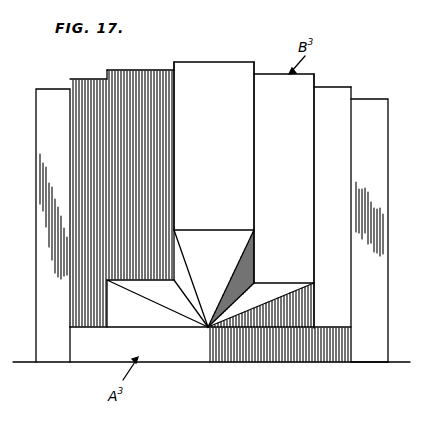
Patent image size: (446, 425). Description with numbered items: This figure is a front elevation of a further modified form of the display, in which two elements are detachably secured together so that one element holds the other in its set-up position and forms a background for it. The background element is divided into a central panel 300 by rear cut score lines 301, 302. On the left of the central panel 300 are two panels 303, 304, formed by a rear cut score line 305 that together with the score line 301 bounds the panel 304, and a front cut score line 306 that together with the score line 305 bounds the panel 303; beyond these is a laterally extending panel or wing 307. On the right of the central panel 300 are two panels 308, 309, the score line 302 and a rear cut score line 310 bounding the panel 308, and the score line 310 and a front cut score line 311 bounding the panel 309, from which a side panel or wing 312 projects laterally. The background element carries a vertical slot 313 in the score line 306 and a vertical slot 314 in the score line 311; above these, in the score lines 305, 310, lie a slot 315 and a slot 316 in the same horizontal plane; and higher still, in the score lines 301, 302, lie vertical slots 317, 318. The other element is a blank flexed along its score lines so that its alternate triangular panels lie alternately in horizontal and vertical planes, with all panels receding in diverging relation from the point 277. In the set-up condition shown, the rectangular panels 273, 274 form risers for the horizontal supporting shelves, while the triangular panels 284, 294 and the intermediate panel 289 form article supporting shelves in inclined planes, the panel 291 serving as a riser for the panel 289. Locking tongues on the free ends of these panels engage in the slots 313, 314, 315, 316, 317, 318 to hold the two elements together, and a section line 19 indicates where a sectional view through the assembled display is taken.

The section line 19 is at (197, 38).
The rectangular panel 273 is at (139, 340).
The rectangular panel 274 is at (283, 355).
The point 277 is at (208, 327).
The triangular panel 284 is at (157, 303).
The intermediate panel 289 is at (214, 278).
The triangular panel 291 is at (251, 278).
The triangular panel 294 is at (261, 305).
The central panel 300 is at (214, 146).
The rear cut score line 301 is at (176, 137).
The rear cut score line 302 is at (255, 135).
The panel 303 is at (88, 68).
The panel 304 is at (150, 72).
The rear cut score line 305 is at (110, 96).
The front cut score line 306 is at (71, 274).
The laterally extending panel or wing 307 is at (43, 96).
The panel 308 is at (284, 178).
The panel 309 is at (332, 100).
The rear cut score line 310 is at (314, 160).
The front cut score line 311 is at (351, 170).
The side panel or wing 312 is at (372, 117).
The vertical slot 313 is at (65, 345).
The vertical slot 314 is at (352, 347).
The slot 315 is at (108, 306).
The slot 316 is at (313, 308).
The vertical slot 317 is at (172, 245).
The vertical slot 318 is at (253, 246).